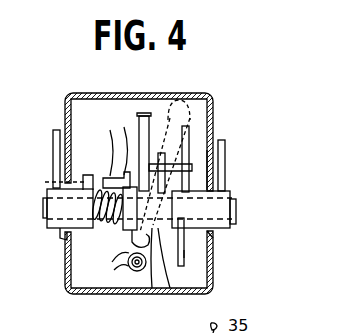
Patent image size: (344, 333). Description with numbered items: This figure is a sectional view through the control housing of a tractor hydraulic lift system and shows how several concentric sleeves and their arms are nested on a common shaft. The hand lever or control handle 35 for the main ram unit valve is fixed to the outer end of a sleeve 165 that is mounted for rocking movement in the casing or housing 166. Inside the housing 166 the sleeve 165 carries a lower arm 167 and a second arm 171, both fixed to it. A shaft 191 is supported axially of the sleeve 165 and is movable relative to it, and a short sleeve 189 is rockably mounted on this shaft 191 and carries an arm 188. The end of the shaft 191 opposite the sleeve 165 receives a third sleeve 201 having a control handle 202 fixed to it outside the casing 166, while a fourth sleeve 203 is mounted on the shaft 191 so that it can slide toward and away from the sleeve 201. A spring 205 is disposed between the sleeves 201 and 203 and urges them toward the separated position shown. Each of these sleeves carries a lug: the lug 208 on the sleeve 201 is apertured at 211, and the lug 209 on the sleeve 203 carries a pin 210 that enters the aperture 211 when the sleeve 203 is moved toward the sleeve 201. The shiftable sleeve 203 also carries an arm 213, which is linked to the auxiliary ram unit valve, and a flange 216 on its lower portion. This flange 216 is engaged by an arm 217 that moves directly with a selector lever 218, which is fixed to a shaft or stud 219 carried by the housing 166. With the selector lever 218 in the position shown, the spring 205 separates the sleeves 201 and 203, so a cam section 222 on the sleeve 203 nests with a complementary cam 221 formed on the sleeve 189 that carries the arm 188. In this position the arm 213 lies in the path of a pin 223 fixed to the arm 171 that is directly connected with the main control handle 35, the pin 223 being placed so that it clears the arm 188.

The housing 166 is at (89, 95).
The control handle 202 is at (53, 146).
The aperture 211 is at (48, 181).
The apertured lug 208 is at (88, 174).
The pin 210 is at (106, 157).
The lug 209 is at (129, 151).
The arm 213 is at (150, 127).
The selector lever 218 is at (200, 97).
The second arm 171 is at (189, 127).
The arm 188 is at (166, 166).
The control handle 35 is at (226, 151).
The pin 223 is at (213, 175).
The third sleeve 201 is at (47, 208).
The spring 205 is at (92, 209).
The fourth sleeve 203 is at (128, 214).
The flange 216 is at (133, 245).
The arm 217 is at (126, 268).
The stud 219 is at (137, 272).
The complementary cam 221 is at (163, 289).
The short sleeve 189 is at (181, 268).
The lower arm 167 is at (184, 254).
The cam section 222 is at (201, 209).
The shaft 191 is at (237, 210).
The sleeve 165 is at (215, 229).